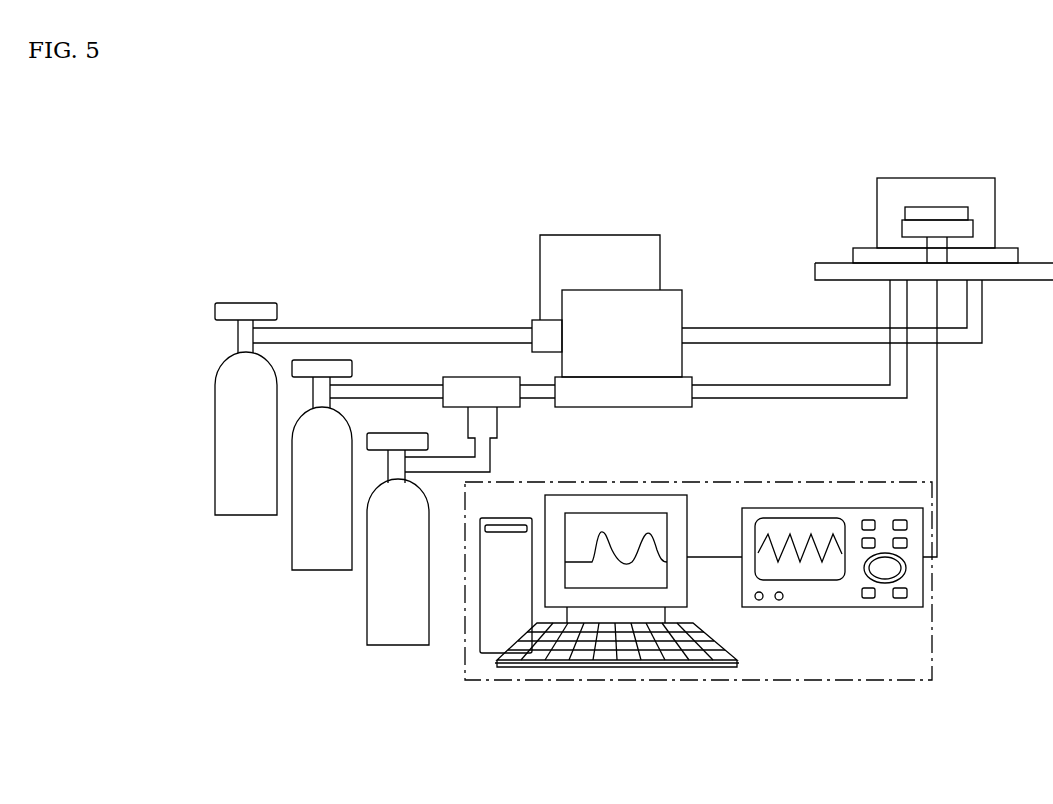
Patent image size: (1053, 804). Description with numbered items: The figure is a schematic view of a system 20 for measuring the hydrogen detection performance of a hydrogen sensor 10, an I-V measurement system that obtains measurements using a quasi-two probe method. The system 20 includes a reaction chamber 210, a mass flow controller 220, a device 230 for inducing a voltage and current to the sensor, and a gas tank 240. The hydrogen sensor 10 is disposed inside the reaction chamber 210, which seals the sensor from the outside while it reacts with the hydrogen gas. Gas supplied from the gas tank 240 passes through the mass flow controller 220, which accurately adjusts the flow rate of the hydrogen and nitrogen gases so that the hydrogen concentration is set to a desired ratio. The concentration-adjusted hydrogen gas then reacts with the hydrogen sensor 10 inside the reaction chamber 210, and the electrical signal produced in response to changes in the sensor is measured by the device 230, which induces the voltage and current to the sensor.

The system 20 is at (458, 186).
The hydrogen sensor 10 is at (929, 208).
The reaction chamber 210 is at (966, 178).
The mass flow controller 220 is at (597, 235).
The device for inducing a voltage and current to the sensor 230 is at (705, 680).
The gas tank 240 is at (245, 515).